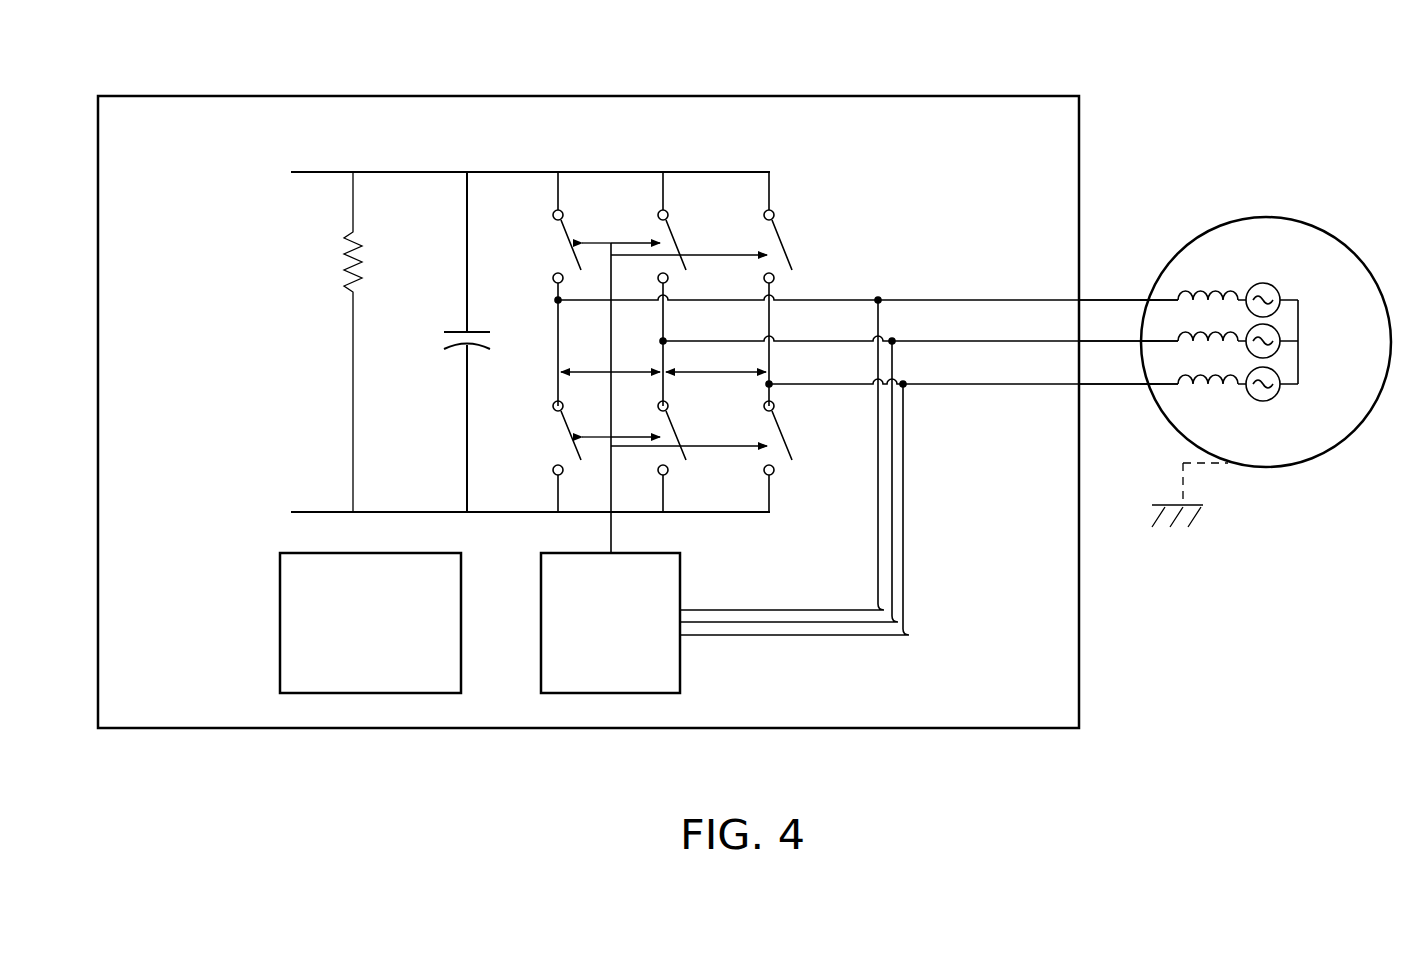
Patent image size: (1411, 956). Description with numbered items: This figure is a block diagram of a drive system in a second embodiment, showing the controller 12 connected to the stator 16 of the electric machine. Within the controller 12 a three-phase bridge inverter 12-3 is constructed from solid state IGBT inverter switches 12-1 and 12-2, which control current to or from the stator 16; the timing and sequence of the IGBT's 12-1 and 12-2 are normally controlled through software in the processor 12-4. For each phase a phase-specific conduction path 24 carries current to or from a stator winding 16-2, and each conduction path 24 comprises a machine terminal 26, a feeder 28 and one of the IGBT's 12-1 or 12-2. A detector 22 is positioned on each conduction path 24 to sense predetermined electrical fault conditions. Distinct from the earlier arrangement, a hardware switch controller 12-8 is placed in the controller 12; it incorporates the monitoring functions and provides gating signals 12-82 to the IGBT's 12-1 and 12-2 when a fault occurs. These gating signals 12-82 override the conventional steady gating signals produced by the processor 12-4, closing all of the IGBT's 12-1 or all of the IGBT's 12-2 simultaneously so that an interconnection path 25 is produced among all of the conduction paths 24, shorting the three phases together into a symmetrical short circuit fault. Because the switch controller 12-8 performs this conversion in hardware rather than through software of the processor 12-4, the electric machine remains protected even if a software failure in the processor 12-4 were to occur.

The controller 12 is at (322, 728).
The three-phase bridge inverter 12-3 is at (541, 172).
The inverter switches 12-1 is at (568, 216).
The inverter switches 12-2 is at (565, 428).
The interconnection path 25 is at (626, 360).
The gating signals 12-82 is at (611, 538).
The hardware switch controller 12-8 is at (680, 576).
The processor 12-4 is at (370, 623).
The conduction path 24 is at (975, 300).
The detector 22 is at (878, 300).
The feeder 28 is at (1090, 300).
The machine terminal 26 is at (1128, 300).
The stator 16 is at (1283, 467).
The stator winding 16-2 is at (1198, 292).